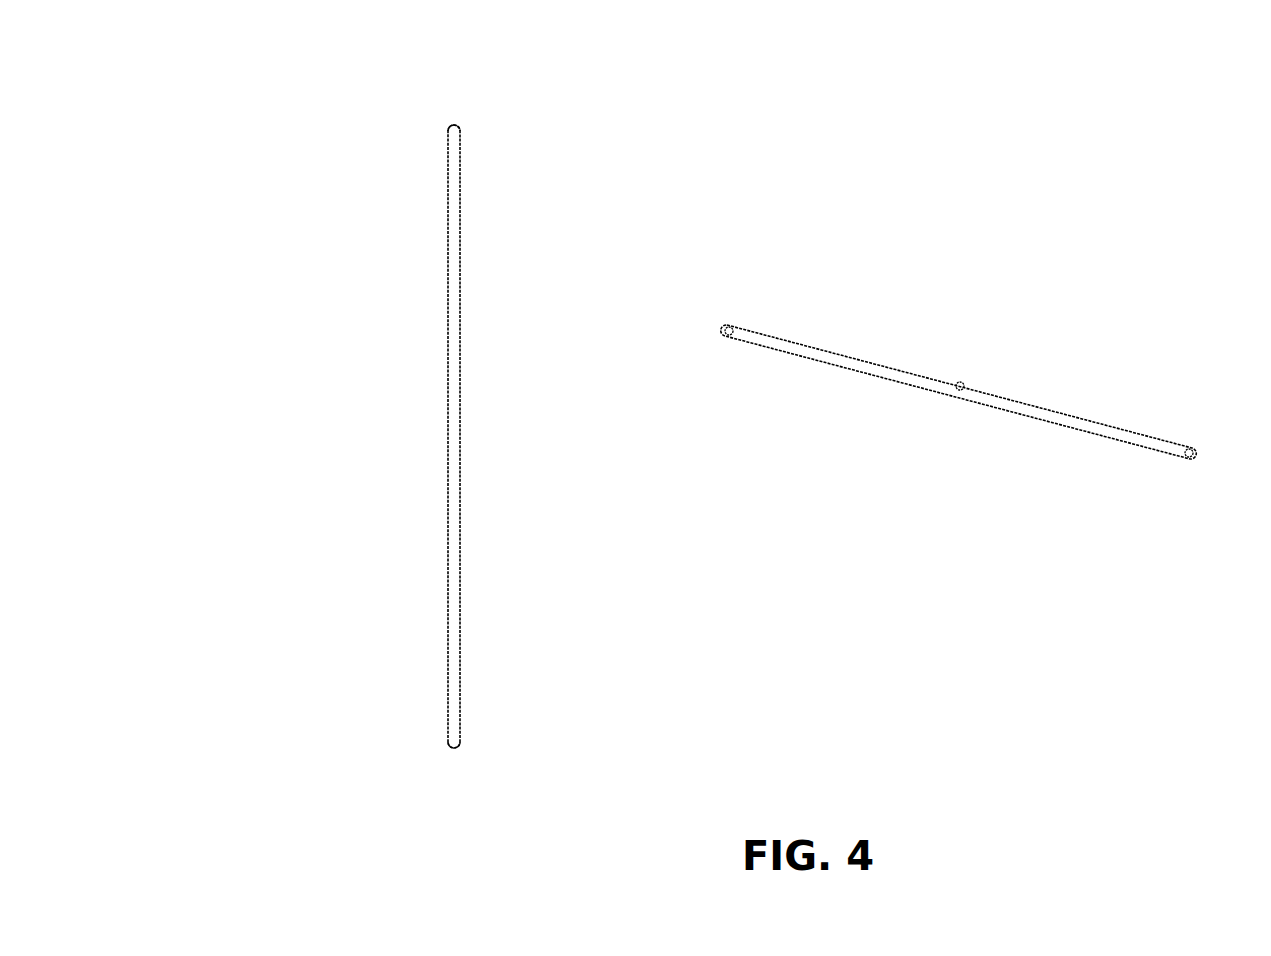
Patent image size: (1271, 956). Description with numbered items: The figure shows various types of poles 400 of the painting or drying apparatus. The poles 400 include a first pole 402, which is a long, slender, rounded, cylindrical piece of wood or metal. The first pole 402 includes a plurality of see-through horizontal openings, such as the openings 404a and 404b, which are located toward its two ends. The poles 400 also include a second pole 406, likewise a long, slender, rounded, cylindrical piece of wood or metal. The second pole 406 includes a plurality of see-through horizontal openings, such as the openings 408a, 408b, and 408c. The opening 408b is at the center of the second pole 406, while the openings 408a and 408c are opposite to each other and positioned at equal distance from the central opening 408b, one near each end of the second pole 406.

The poles 400 is at (316, 114).
The first pole 402 is at (460, 379).
The opening 404a is at (460, 135).
The opening 404b is at (460, 741).
The second pole 406 is at (903, 380).
The opening 408a is at (732, 323).
The opening 408b is at (962, 382).
The opening 408c is at (1187, 446).